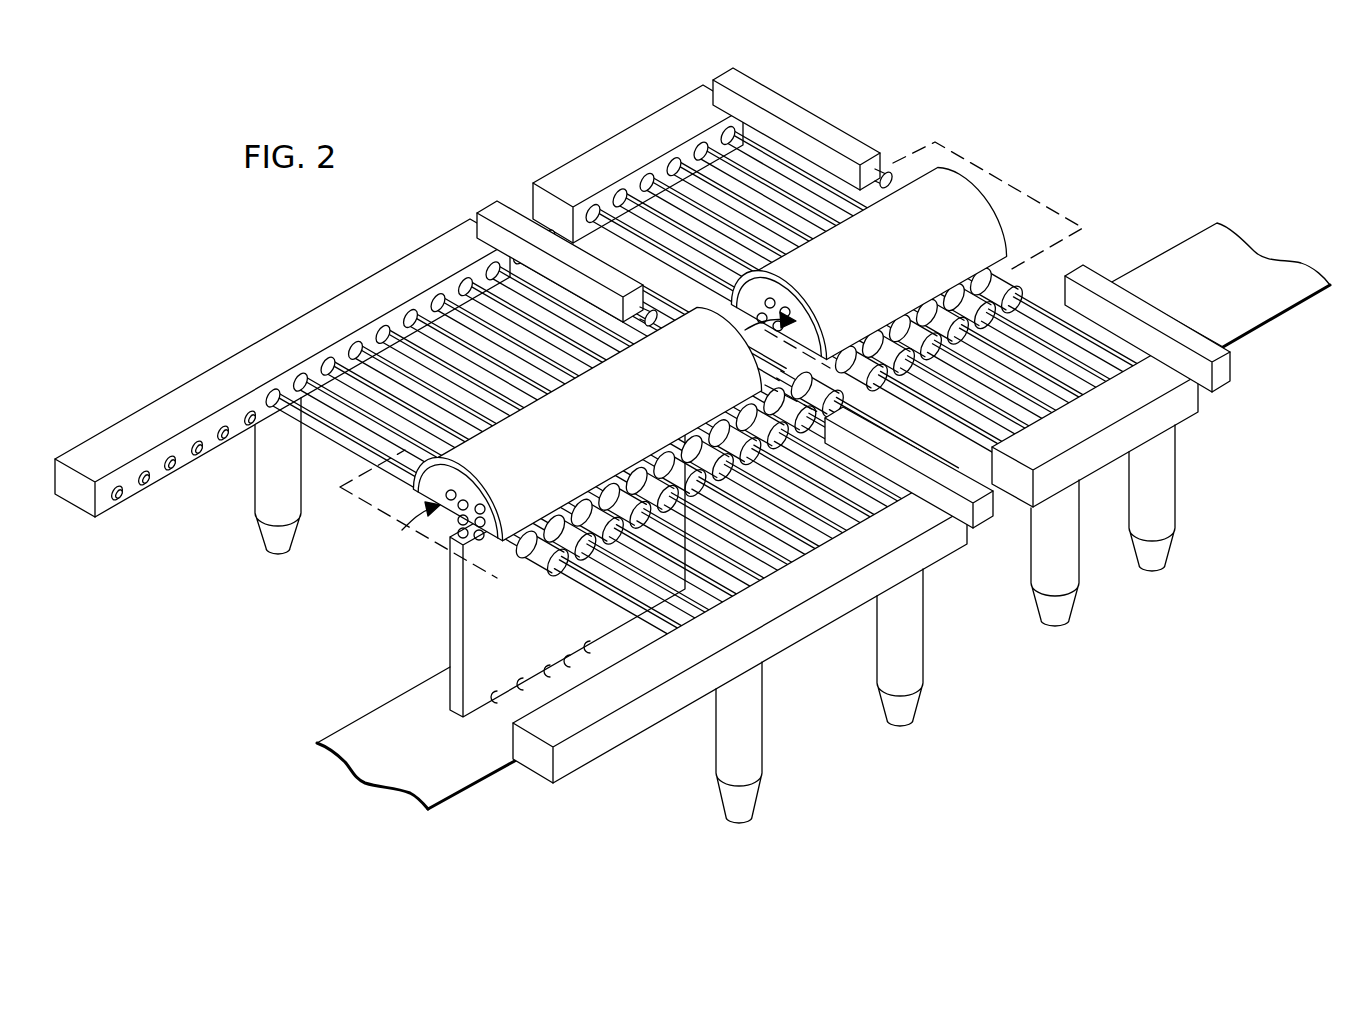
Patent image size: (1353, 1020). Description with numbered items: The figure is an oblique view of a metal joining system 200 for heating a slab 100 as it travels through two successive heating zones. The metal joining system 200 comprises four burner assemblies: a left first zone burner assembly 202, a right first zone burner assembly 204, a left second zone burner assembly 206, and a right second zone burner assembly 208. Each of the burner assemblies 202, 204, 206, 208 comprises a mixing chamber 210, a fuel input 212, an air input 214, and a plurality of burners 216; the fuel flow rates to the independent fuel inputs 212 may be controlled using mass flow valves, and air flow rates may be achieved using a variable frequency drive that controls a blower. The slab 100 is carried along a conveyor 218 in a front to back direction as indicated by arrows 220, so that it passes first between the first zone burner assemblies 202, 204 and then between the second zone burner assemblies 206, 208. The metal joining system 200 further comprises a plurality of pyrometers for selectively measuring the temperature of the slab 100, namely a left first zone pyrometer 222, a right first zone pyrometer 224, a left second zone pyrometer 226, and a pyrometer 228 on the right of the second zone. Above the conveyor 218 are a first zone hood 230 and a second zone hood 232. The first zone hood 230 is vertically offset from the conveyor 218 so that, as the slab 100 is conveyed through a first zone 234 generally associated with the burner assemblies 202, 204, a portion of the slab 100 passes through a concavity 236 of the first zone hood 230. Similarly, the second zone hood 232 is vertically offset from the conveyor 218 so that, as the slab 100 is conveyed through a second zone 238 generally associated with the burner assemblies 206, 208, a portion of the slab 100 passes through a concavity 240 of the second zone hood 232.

The slab 100 is at (432, 630).
The metal joining system 200 is at (1025, 95).
The left first zone burner assembly 202 is at (157, 397).
The right first zone burner assembly 204 is at (623, 750).
The left second zone burner assembly 206 is at (570, 153).
The right second zone burner assembly 208 is at (1182, 417).
The mixing chamber 210 is at (260, 347).
The fuel input 212 is at (254, 486).
The air input 214 is at (923, 627).
The burners 216 is at (373, 380).
The conveyor 218 is at (447, 773).
The arrows 220 is at (336, 797).
The left first zone pyrometer 222 is at (482, 205).
The right first zone pyrometer 224 is at (988, 530).
The left second zone pyrometer 226 is at (827, 127).
The right first zone pyrometer 228 is at (1233, 363).
The first zone hood 230 is at (587, 423).
The second zone hood 232 is at (868, 264).
The first zone 234 is at (390, 517).
The concavity 236 is at (445, 505).
The second zone 238 is at (1007, 193).
The concavity 240 is at (775, 338).